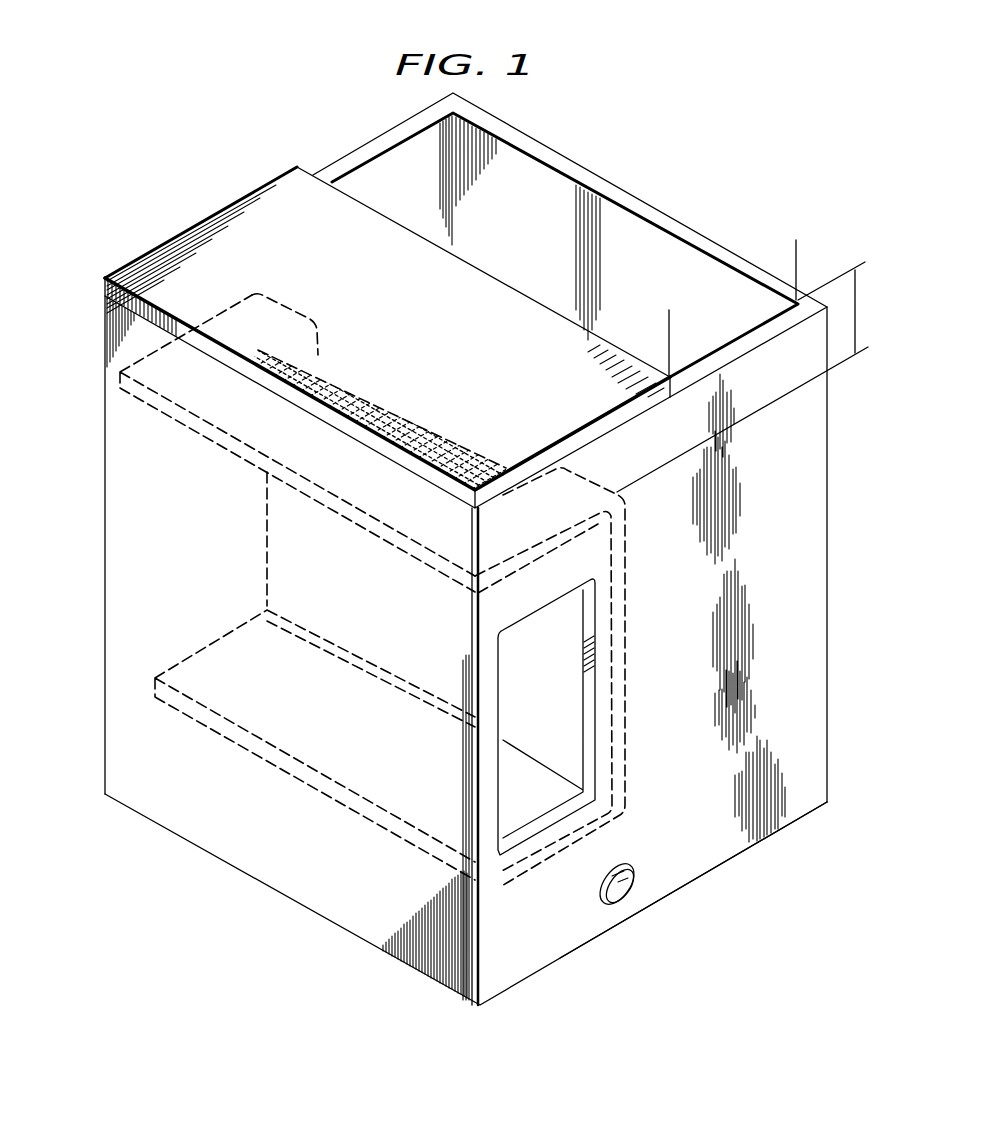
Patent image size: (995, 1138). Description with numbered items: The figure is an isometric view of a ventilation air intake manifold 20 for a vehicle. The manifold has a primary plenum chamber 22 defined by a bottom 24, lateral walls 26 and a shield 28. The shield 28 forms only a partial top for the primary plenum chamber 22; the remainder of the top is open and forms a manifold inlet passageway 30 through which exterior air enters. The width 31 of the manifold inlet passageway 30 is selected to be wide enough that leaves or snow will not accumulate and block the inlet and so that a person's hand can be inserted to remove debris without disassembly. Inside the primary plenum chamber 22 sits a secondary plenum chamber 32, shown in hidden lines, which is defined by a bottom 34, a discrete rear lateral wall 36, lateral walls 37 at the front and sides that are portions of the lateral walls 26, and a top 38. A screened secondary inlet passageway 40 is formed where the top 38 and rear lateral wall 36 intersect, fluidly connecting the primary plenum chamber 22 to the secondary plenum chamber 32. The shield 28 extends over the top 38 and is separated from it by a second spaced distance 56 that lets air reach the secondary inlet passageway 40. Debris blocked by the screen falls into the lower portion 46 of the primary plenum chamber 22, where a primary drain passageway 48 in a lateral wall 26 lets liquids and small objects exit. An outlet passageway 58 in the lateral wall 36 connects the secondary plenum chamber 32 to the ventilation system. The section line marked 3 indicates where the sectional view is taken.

The air intake manifold 20 is at (266, 161).
The primary plenum chamber 22 is at (803, 579).
The bottom 24 is at (423, 975).
The lateral walls 26 is at (363, 144).
The shield 28 is at (490, 282).
The manifold inlet passageway 30 is at (520, 186).
The width 31 is at (797, 243).
The secondary plenum chamber 32 is at (238, 599).
The bottom 34 is at (188, 660).
The lateral wall 36 is at (612, 620).
The lateral walls 37 is at (250, 541).
The top 38 is at (205, 413).
The secondary inlet passageway 40 is at (403, 392).
The lower portion 46 is at (697, 855).
The primary drain passageway 48 is at (614, 892).
The second spaced distance 56 is at (855, 265).
The outlet passageway 58 is at (585, 712).
The section line 3- 3 is at (687, 188).